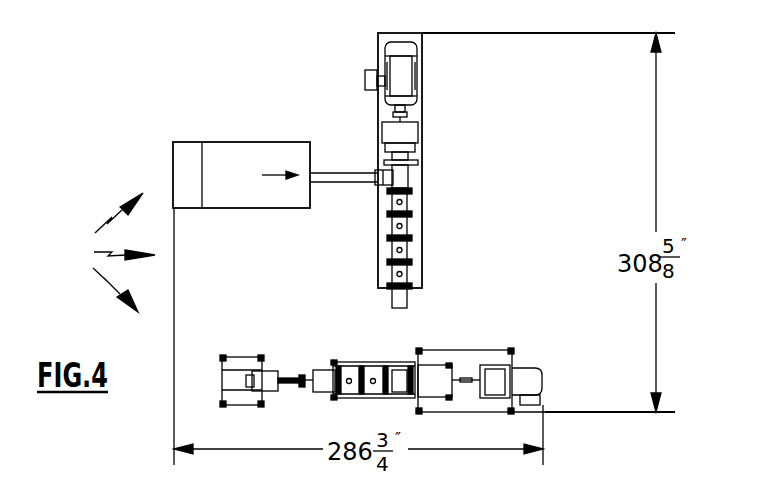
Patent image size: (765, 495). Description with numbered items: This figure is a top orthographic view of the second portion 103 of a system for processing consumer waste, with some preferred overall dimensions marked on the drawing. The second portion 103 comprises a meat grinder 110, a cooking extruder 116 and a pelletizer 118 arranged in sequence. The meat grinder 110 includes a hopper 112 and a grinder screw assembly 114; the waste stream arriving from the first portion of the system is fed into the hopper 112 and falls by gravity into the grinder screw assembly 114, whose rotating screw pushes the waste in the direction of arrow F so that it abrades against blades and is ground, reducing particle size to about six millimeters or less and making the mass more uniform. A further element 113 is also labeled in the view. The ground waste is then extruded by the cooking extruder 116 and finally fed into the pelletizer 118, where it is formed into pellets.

The second portion 103 is at (90, 256).
The meat grinder 110 is at (218, 165).
The hopper 112 is at (260, 142).
The cylinder end cap 113 is at (187, 142).
The grinder screw assembly 114 is at (332, 170).
The cooking extruder 116 is at (405, 205).
The pelletizer 118 is at (465, 360).